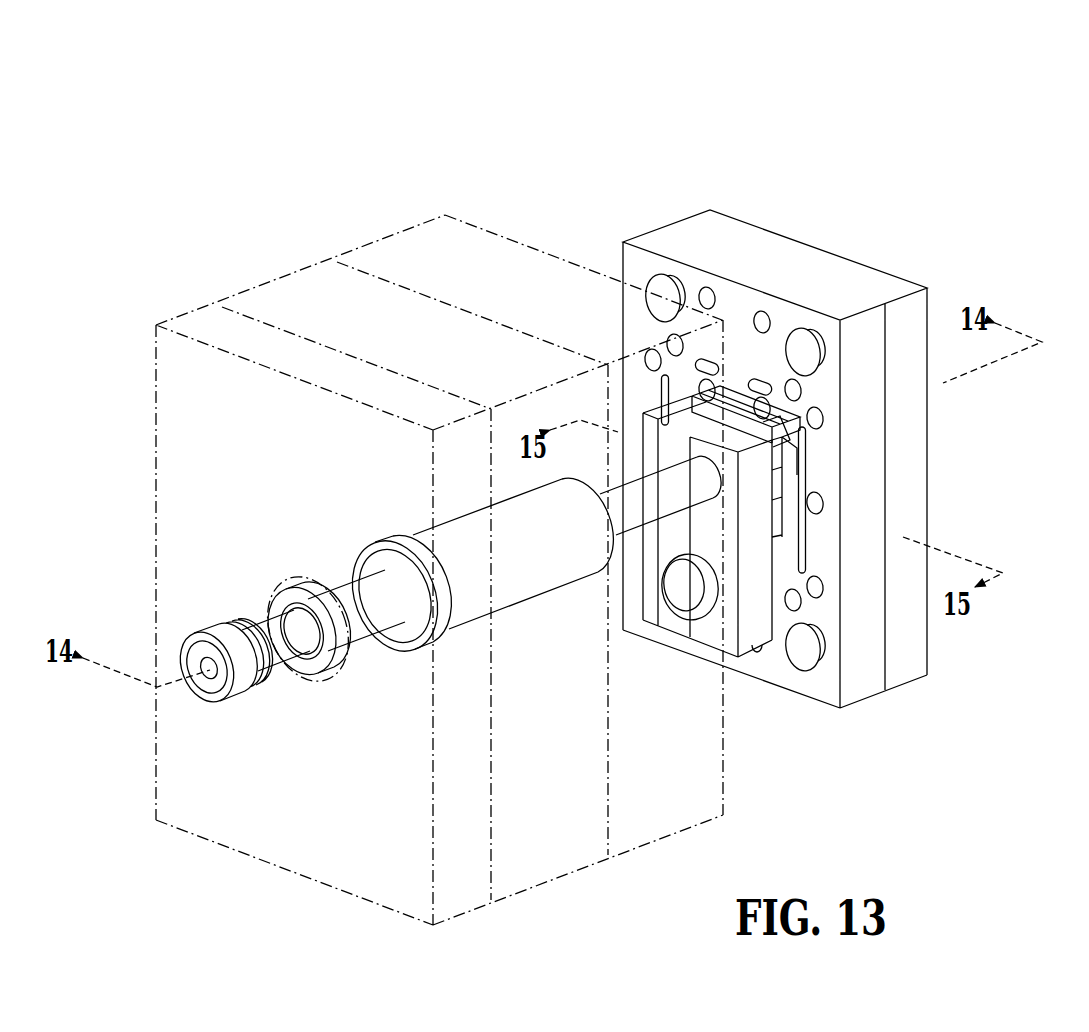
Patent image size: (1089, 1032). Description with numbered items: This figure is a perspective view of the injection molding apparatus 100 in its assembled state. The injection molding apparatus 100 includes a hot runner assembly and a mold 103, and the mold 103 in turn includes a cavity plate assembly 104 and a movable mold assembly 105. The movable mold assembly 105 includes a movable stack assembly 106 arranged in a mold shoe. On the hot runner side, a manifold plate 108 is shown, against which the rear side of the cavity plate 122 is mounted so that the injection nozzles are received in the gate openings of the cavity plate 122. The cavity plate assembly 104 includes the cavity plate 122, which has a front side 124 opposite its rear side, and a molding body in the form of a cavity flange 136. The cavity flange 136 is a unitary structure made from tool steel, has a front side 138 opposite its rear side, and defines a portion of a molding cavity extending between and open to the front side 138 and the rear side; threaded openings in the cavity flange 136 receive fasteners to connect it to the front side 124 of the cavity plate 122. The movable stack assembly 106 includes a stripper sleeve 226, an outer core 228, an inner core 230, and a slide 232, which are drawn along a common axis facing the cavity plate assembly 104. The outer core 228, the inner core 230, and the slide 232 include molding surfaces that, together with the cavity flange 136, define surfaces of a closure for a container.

The injection molding apparatus 100 is at (242, 69).
The mold 103 is at (396, 177).
The cavity plate assembly 104 is at (554, 229).
The movable mold assembly 105 is at (285, 275).
The movable stack assembly 106 is at (289, 487).
The manifold plate 108 is at (712, 213).
The cavity plate 122 is at (660, 238).
The front side 124 is at (611, 299).
The cavity flange 136 is at (740, 410).
The front side 138 is at (752, 506).
The stripper sleeve 226 is at (510, 525).
The outer core 228 is at (362, 585).
The inner core 230 is at (260, 635).
The slide 232 is at (655, 608).